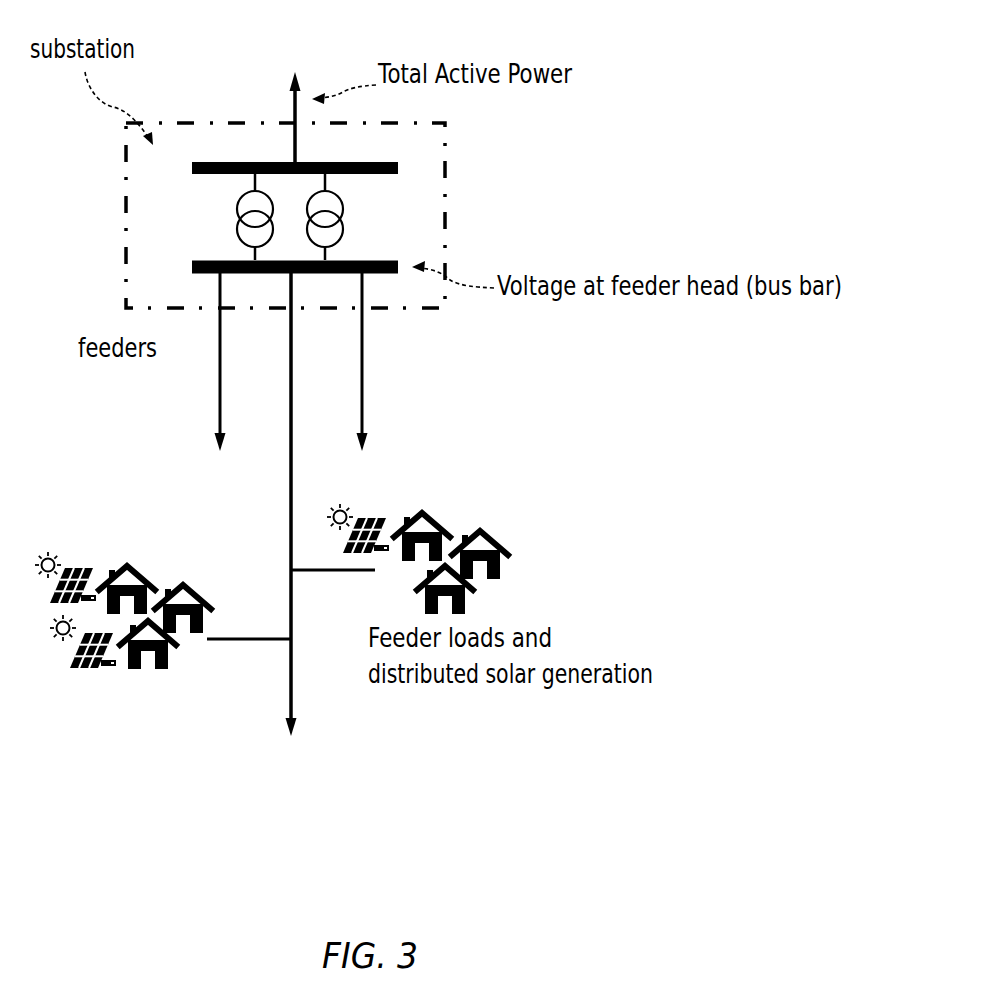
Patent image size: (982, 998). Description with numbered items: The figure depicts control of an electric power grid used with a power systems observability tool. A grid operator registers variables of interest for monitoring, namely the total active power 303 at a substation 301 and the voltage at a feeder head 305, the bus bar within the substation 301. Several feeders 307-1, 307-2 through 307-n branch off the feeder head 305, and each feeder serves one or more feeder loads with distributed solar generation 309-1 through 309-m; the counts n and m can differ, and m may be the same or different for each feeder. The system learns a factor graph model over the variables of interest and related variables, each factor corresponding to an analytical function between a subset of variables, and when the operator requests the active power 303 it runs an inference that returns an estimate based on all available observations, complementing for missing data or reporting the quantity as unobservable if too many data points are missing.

The substation 301 is at (445, 221).
The active power 303 is at (292, 110).
The feeder head 305 is at (372, 276).
The feeder 307-1 is at (220, 403).
The feeder 307-2 is at (291, 447).
The feeder 307-n is at (362, 395).
The feeder loads with distributed solar generation 309-1 is at (240, 642).
The feeder loads with distributed solar generation 309-m is at (330, 572).